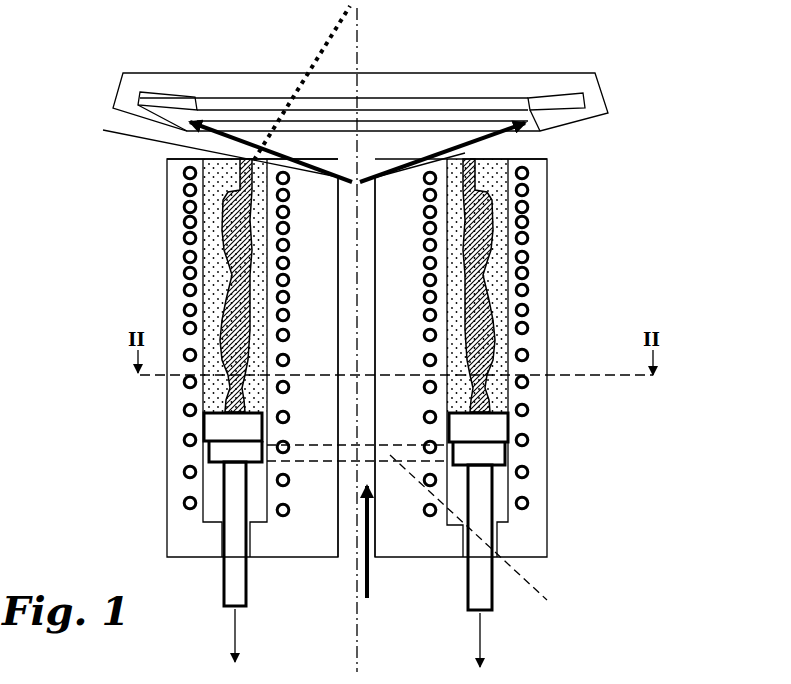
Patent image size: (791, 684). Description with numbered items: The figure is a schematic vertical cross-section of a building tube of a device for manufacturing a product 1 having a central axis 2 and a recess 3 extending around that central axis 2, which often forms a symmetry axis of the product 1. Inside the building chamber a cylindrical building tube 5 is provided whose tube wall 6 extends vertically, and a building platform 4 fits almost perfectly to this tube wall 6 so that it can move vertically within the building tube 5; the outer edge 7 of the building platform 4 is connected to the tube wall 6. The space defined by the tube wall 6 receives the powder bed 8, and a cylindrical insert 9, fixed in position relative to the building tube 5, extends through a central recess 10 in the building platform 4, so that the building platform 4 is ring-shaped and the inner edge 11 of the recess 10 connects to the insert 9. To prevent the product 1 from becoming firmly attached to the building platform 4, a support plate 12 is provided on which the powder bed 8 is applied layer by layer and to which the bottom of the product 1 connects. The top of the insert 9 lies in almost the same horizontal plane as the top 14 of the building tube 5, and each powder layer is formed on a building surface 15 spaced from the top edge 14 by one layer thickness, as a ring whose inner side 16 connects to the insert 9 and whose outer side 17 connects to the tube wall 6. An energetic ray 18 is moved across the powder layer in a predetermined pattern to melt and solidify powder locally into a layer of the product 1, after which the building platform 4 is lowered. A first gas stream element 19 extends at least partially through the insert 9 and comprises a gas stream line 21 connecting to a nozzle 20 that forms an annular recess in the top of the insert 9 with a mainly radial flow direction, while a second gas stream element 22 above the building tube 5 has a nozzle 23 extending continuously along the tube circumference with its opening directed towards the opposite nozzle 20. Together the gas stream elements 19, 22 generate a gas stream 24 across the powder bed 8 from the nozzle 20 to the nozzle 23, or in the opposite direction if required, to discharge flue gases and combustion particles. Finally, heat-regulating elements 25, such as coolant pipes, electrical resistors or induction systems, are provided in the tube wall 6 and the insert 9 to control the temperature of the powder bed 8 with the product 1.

The product 1 is at (232, 270).
The central axis 2 is at (357, 638).
The recess 3 is at (262, 250).
The building platform 4 is at (223, 463).
The building tube 5 is at (177, 423).
The tube wall 6 is at (202, 390).
The outer edge 7 is at (205, 453).
The powder bed 8 is at (520, 277).
The insert 9 is at (305, 503).
The central recess 10 is at (475, 561).
The inner edge 11 is at (457, 455).
The support plate 12 is at (495, 427).
The top of the building tube 14 is at (167, 163).
The building surface 15 is at (270, 150).
The inner side 16 is at (440, 157).
The outer side 17 is at (527, 163).
The energetic ray 18 is at (342, 42).
The first gas stream element 19 is at (337, 155).
The nozzle 20 is at (415, 157).
The gas stream line 21 is at (365, 285).
The second gas stream element 22 is at (131, 86).
The nozzle 23 is at (228, 117).
The gas stream 24 is at (513, 110).
The heat-regulating elements 25 is at (183, 308).